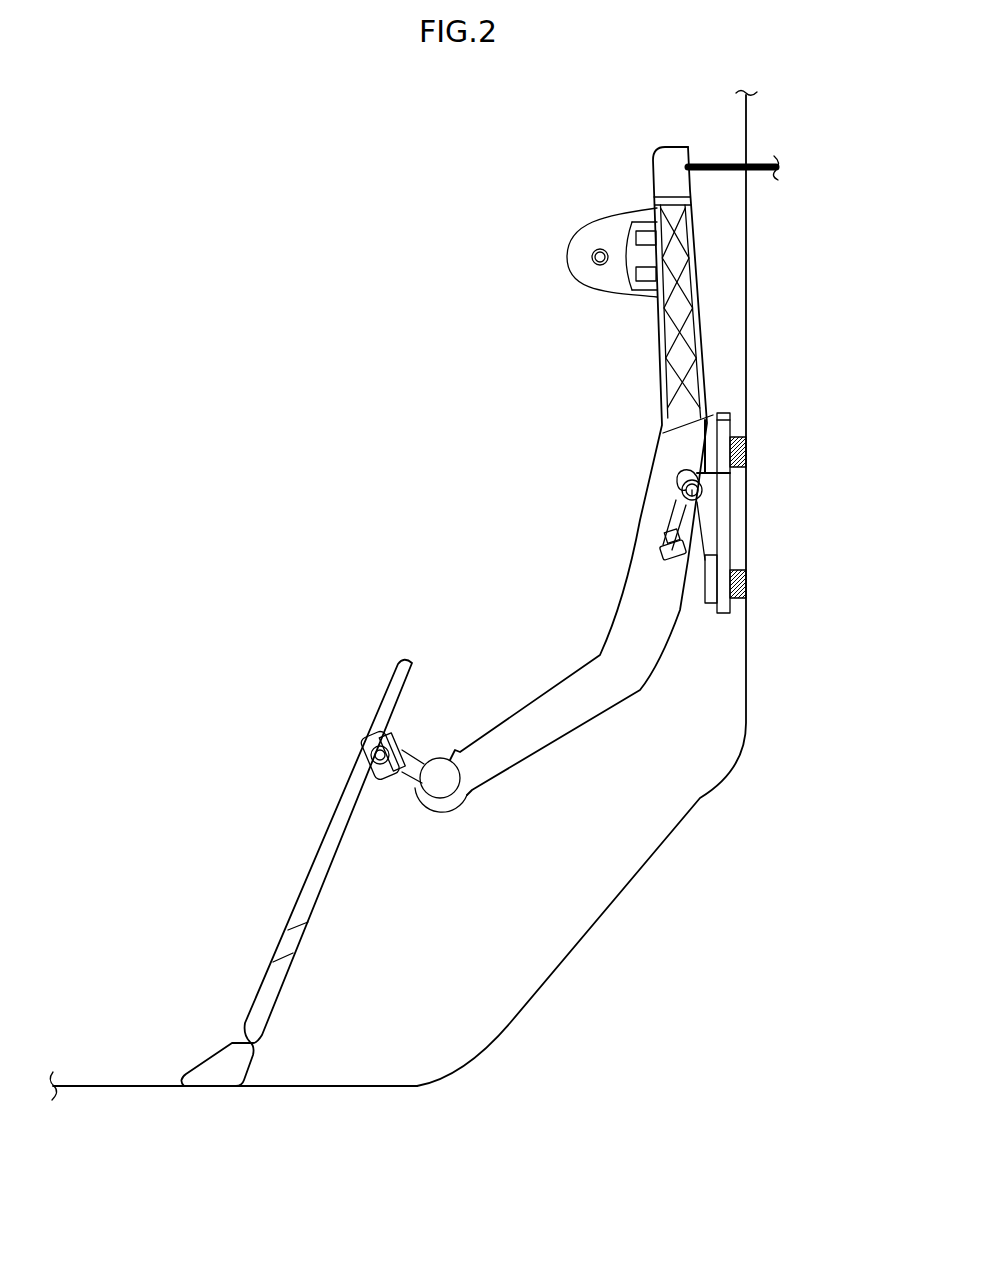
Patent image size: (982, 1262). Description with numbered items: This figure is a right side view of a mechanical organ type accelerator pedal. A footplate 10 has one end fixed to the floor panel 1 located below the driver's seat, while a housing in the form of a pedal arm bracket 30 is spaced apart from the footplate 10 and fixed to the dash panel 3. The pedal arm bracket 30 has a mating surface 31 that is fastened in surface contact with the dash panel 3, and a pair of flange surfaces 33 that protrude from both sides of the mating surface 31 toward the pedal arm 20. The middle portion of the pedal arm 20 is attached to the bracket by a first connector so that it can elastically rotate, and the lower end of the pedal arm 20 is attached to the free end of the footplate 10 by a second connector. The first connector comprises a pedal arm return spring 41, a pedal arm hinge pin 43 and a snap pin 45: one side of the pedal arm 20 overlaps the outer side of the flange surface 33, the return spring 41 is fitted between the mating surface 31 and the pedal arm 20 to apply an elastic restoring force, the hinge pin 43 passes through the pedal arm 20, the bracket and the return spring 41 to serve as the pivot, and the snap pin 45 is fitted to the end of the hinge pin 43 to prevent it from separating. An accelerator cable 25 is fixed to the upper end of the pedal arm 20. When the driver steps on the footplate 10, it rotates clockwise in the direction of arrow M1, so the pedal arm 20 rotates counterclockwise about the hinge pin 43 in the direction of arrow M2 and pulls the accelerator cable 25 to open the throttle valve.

The floor panel 1 is at (107, 1086).
The dash panel 3 is at (747, 251).
The footplate 10 is at (305, 866).
The pedal arm 20 is at (552, 678).
The accelerator cable 25 is at (762, 163).
The pedal arm bracket 30 is at (722, 627).
The mating surface 31 is at (727, 523).
The flange surface 33 is at (703, 450).
The pedal arm return spring 41 is at (667, 520).
The pedal arm hinge pin 43 is at (700, 490).
The snap pin 45 is at (690, 478).
The arrow M1 is at (290, 793).
The arrow M2 is at (735, 334).